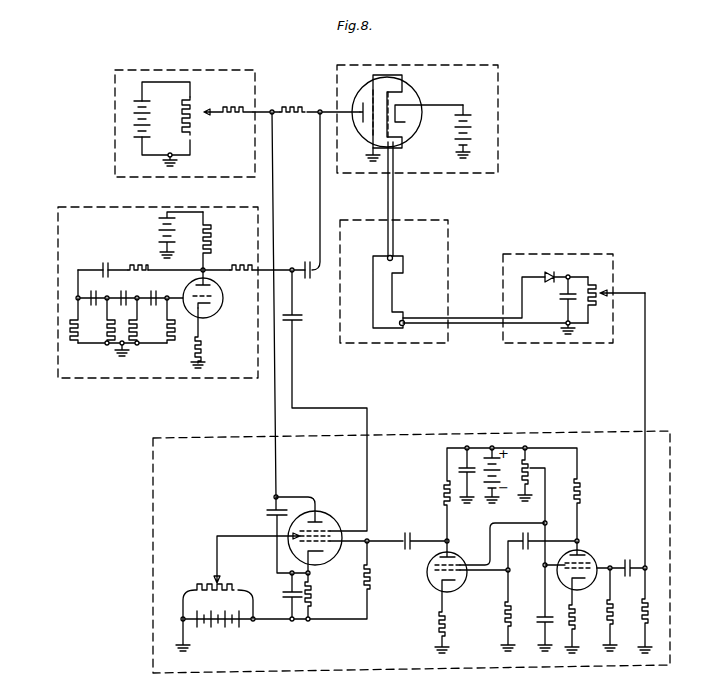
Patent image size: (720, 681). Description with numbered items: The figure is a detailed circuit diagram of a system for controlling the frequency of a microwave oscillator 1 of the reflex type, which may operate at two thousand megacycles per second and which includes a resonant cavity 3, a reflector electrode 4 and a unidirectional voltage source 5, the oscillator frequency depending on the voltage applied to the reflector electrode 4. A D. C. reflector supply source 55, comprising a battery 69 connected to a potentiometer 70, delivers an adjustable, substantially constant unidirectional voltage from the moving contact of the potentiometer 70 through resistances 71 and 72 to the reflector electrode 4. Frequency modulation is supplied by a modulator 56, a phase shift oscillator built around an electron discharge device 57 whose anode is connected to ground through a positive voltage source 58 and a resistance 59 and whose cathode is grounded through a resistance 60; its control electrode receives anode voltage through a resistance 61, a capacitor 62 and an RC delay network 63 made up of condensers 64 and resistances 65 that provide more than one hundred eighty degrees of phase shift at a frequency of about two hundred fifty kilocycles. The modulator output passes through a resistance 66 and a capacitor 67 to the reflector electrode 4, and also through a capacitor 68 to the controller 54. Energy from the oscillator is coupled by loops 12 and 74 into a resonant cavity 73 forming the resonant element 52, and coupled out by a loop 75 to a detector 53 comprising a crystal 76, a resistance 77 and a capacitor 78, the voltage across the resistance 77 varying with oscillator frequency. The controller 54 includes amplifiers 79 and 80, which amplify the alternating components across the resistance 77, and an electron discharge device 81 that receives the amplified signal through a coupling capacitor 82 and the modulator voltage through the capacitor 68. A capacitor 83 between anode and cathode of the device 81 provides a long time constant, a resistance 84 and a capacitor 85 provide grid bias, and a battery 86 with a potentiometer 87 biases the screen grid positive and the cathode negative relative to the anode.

The microwave oscillator 1 is at (498, 112).
The resonant cavity 3 is at (400, 77).
The reflector electrode 4 is at (362, 118).
The unidirectional voltage source 5 is at (457, 133).
The coupling loop 12 is at (396, 146).
The resonant element 52 is at (448, 222).
The detector 53 is at (613, 268).
The controller 54 is at (153, 524).
The D. C. reflector supply source 55 is at (115, 118).
The modulator 56 is at (58, 285).
The electron discharge device 57 is at (224, 298).
The positive voltage source 58 is at (158, 233).
The resistance 59 is at (212, 228).
The resistance 60 is at (205, 342).
The resistance 61 is at (137, 266).
The capacitor 62 is at (105, 262).
The RC delay network 63 is at (160, 364).
The condensers 64 is at (155, 291).
The resistances 65 is at (84, 324).
The resistance 66 is at (242, 266).
The capacitor 67 is at (307, 262).
The capacitor 68 is at (303, 318).
The battery 69 is at (150, 118).
The potentiometer 70 is at (192, 100).
The resistance 71 is at (235, 118).
The resistance 72 is at (295, 108).
The resonant cavity 73 is at (393, 290).
The coupling loop 74 is at (404, 259).
The coupling loop 75 is at (400, 326).
The crystal 76 is at (547, 275).
The resistance 77 is at (590, 280).
The capacitor 78 is at (560, 297).
The amplifier 79 is at (618, 523).
The amplifier 80 is at (440, 531).
The electron discharge device 81 is at (328, 517).
The coupling capacitor 82 is at (406, 551).
The capacitor 83 is at (266, 512).
The resistance 84 is at (315, 593).
The capacitor 85 is at (283, 595).
The battery 86 is at (220, 630).
The potentiometer 87 is at (210, 583).